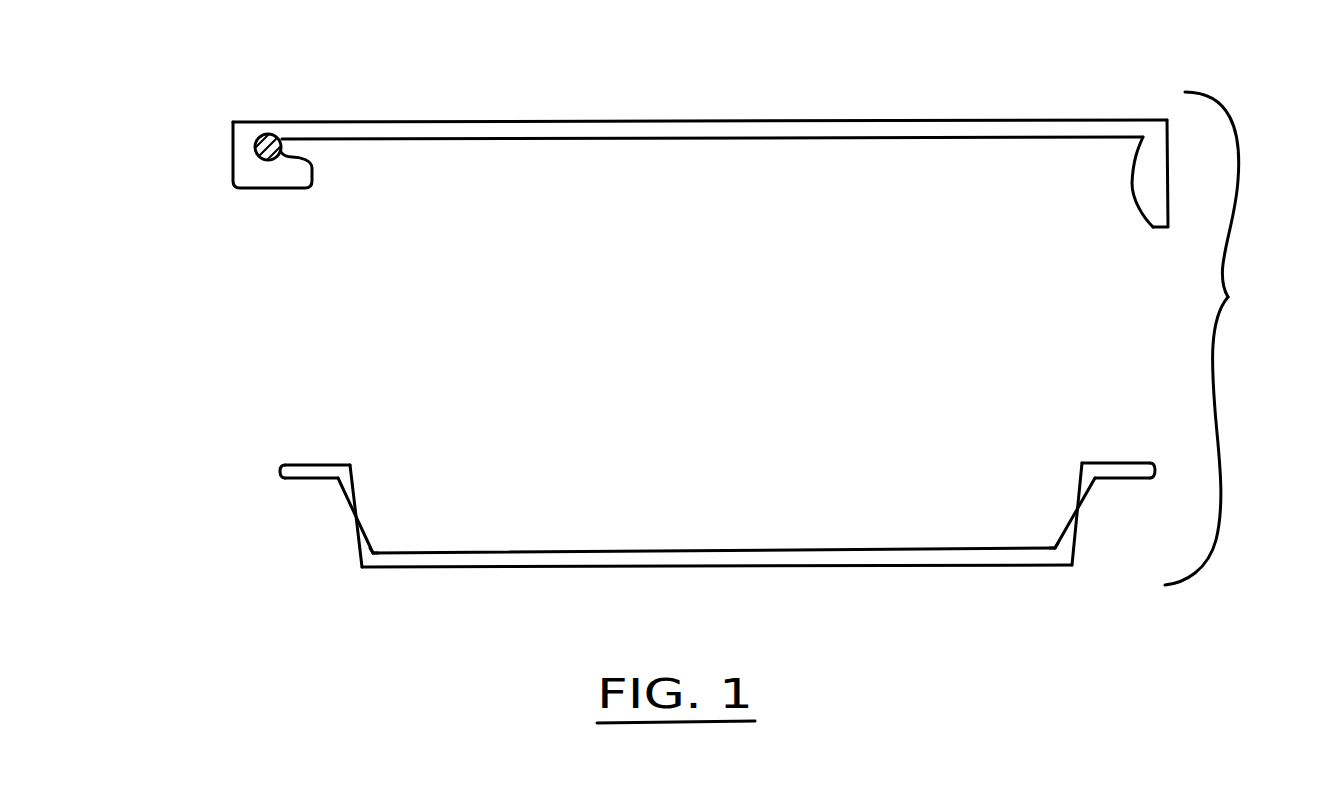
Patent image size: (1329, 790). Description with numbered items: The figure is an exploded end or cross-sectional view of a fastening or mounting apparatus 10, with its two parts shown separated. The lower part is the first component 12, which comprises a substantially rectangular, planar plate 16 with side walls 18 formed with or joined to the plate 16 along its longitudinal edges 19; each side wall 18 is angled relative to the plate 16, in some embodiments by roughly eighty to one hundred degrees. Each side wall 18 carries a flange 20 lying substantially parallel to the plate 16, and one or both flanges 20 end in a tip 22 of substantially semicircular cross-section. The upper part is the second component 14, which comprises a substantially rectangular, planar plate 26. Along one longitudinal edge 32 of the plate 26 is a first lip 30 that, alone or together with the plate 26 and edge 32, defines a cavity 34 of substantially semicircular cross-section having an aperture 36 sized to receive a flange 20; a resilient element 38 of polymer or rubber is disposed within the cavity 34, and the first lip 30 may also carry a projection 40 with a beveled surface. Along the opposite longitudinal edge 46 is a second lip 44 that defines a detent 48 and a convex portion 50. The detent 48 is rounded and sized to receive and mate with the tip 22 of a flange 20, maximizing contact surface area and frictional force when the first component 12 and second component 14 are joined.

The fastening or mounting apparatus 10 is at (1232, 338).
The first component 12 is at (705, 480).
The second component 14 is at (680, 161).
The plate 16 is at (555, 555).
The side walls 18 is at (357, 508).
The longitudinal edges 19 is at (378, 552).
The flange 20 is at (305, 472).
The tip 22 is at (283, 475).
The plate 26 is at (660, 128).
The first lip 30 is at (282, 135).
The longitudinal edge 32 is at (287, 130).
The cavity 34 is at (278, 137).
The aperture 36 is at (302, 145).
The resilient element 38 is at (257, 152).
The projection 40 is at (290, 177).
The second lip 44 is at (1121, 170).
The longitudinal edge 46 is at (1130, 127).
The detent 48 is at (1143, 137).
The convex portion 50 is at (1133, 205).